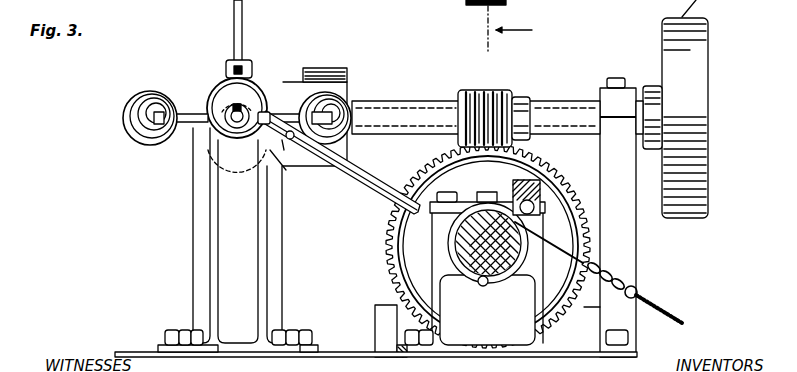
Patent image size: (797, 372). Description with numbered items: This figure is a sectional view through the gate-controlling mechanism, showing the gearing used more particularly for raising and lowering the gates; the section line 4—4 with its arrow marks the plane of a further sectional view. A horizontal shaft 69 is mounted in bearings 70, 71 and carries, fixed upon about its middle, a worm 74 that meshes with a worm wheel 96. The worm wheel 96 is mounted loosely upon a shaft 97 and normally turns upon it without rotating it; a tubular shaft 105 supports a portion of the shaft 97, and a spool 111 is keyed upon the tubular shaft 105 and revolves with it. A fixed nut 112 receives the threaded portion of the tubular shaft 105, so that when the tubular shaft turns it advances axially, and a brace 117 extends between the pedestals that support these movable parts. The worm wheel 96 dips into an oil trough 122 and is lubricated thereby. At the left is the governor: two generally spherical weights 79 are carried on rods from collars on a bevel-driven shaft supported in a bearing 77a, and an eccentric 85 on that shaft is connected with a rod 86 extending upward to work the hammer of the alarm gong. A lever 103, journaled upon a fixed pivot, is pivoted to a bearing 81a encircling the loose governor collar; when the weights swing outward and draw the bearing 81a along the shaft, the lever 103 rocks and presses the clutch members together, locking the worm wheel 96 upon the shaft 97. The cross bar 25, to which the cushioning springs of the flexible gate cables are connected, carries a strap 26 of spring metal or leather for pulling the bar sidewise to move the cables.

The section line 4— 4 is at (499, 35).
The cross bar 25 is at (662, 311).
The strap 26 is at (566, 250).
The horizontal shaft 69 is at (415, 117).
The bearing 70 is at (326, 71).
The bearing 71 is at (606, 98).
The worm 74 is at (501, 97).
The bearing 77a is at (277, 98).
The weights 79 is at (144, 98).
The bearing 81a is at (288, 170).
The eccentric 85 is at (256, 83).
The rod 86 is at (234, 13).
The worm wheel 96 is at (553, 164).
The shaft 97 is at (480, 285).
The lever 103 is at (360, 190).
The tubular shaft 105 is at (452, 265).
The spool 111 is at (450, 238).
The fixed nut 112 is at (626, 242).
The brace 117 is at (519, 188).
The oil trough 122 is at (375, 337).